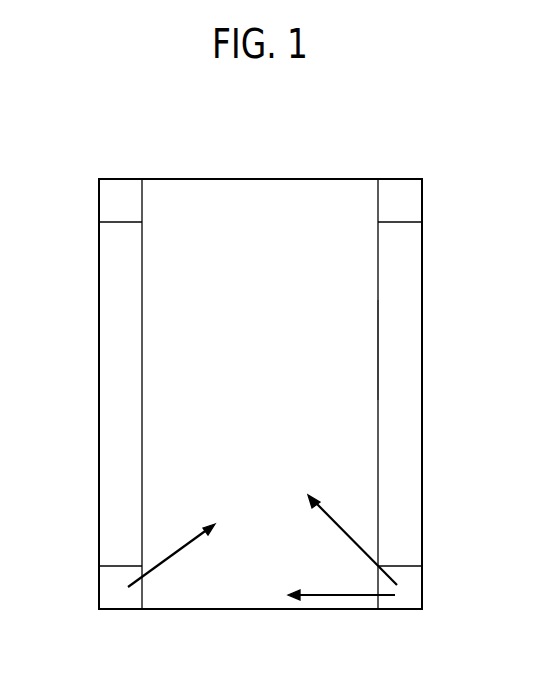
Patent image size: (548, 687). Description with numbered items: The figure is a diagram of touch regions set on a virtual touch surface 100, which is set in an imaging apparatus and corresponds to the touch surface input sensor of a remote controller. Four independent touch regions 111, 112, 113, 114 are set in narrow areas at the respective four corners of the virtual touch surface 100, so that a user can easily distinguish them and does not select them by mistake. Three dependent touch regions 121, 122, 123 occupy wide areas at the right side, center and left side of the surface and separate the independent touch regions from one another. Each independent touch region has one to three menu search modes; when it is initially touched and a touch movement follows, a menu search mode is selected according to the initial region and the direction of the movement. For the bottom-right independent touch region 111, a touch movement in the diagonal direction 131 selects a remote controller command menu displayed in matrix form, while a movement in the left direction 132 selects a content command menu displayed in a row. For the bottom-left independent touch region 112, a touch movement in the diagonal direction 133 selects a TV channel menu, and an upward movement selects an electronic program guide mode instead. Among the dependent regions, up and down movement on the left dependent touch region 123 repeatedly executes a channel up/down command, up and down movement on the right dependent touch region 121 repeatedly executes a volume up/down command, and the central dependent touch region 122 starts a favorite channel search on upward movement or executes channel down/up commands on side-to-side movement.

The virtual touch surface 100 is at (260, 178).
The independent touch region 111 is at (407, 588).
The independent touch region 112 is at (113, 590).
The independent touch region 113 is at (113, 203).
The independent touch region 114 is at (408, 200).
The right dependent touch region 121 is at (405, 450).
The central dependent touch region 122 is at (345, 345).
The left dependent touch region 123 is at (113, 395).
The diagonal direction 131 is at (347, 530).
The left direction 132 is at (343, 597).
The diagonal direction 133 is at (175, 552).